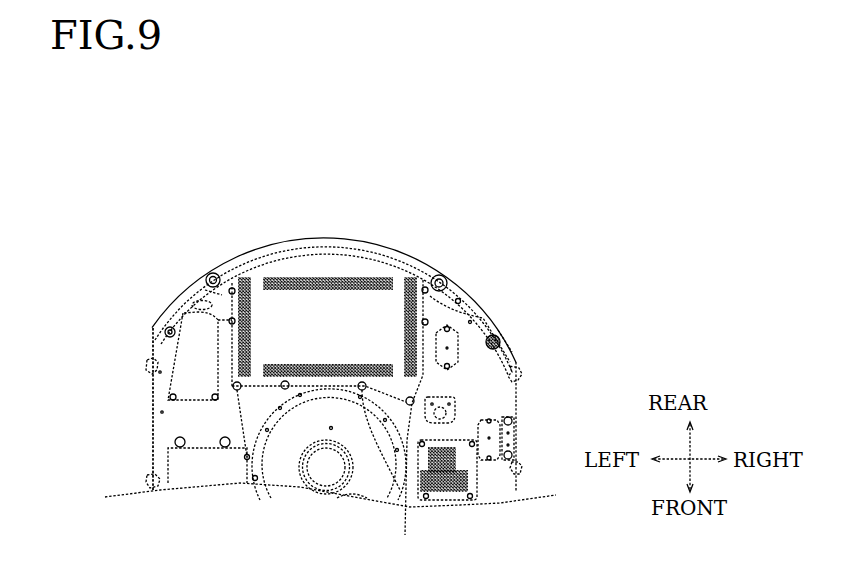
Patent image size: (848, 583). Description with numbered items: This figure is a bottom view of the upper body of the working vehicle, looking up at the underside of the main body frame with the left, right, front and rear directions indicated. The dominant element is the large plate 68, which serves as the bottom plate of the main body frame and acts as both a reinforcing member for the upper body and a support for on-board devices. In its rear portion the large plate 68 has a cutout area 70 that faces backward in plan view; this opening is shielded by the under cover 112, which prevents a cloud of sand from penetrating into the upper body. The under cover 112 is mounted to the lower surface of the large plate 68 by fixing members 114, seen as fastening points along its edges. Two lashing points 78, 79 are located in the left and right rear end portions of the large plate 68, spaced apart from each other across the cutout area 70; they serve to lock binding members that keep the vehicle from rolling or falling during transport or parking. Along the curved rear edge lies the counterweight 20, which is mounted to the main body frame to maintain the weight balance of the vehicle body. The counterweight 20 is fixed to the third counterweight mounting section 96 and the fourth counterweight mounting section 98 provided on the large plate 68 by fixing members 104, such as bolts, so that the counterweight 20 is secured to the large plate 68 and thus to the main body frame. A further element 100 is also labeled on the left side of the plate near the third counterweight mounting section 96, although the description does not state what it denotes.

The counterweight 20 is at (268, 250).
The cutout area 70 is at (327, 303).
The under cover 112 is at (358, 273).
The lashing point 78 is at (209, 275).
The lashing point 79 is at (443, 277).
The fixing members 114 is at (200, 305).
The fourth counterweight mounting section 98 is at (510, 345).
The fixing members 104 is at (514, 367).
The screw 100 is at (165, 333).
The third counterweight mounting section 96 is at (149, 368).
The large plate 68 is at (153, 423).